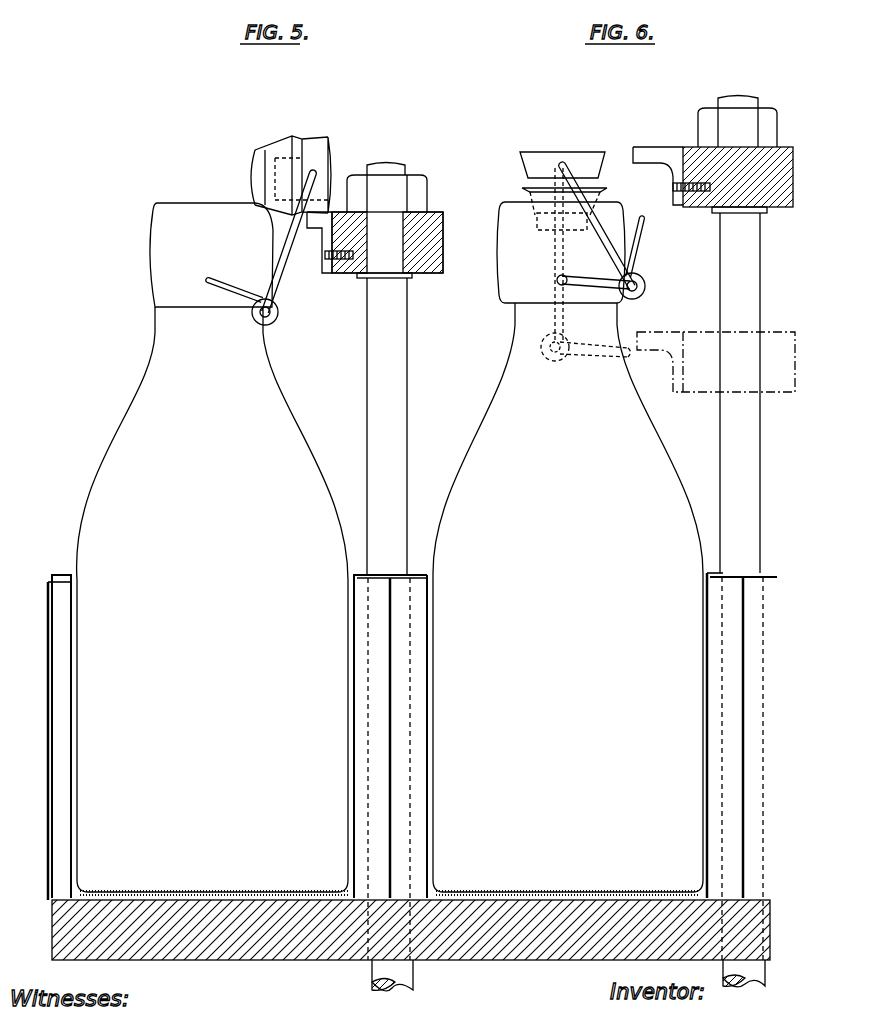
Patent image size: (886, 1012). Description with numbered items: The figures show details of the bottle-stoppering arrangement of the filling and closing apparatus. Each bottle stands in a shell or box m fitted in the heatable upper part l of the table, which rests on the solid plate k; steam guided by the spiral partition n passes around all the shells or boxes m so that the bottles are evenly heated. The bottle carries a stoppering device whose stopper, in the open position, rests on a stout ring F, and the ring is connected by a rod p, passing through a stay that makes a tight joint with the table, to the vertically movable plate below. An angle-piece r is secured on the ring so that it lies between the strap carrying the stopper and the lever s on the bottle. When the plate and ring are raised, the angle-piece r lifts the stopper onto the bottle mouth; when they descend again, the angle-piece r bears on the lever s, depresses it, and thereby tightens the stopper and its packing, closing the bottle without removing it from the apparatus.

In FIG. 5, the ring F is at (443, 245).
In FIG. 6, the ring F is at (793, 170).
In FIG. 5, the angle-piece r is at (310, 228).
In FIG. 6, the angle-piece r is at (653, 160).
In FIG. 5, the lever s is at (265, 287).
In FIG. 6, the lever s is at (638, 243).
In FIG. 5, the rod p is at (385, 632).
In FIG. 6, the rod p is at (739, 597).
In FIG. 5, the upper part of table l is at (48, 748).
In FIG. 5, the shell, box, or frame m is at (353, 754).
In FIG. 5, the spiral partition n is at (391, 760).
In FIG. 5, the solid plate k is at (453, 962).